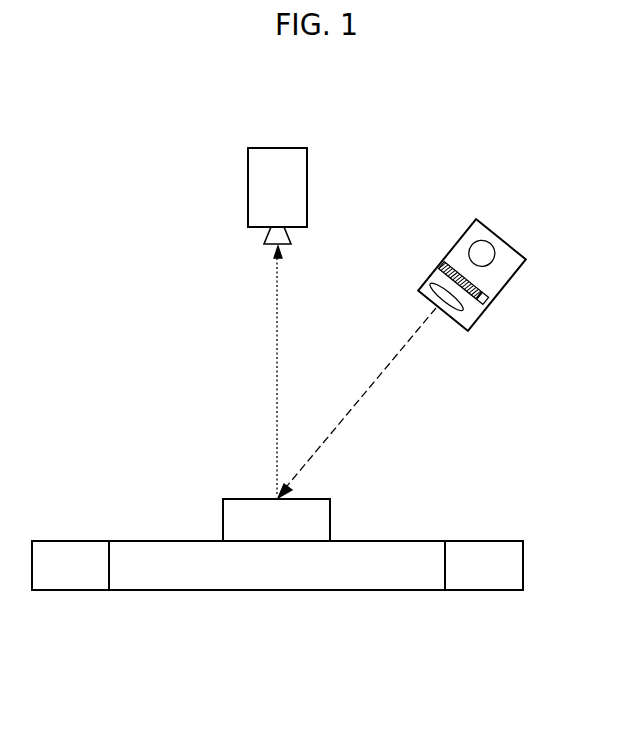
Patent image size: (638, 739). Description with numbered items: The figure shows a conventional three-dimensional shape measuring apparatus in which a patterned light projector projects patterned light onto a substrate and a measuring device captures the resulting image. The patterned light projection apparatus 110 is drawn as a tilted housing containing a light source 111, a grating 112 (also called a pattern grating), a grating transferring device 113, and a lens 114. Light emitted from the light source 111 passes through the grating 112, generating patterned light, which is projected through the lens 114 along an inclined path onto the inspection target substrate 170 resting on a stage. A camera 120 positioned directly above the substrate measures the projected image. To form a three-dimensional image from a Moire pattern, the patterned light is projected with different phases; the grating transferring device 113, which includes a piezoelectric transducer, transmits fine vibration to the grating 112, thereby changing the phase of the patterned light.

The patterned light projection apparatus 110 is at (503, 236).
The light source 111 is at (476, 246).
The grating 112 is at (442, 263).
The grating transferring device 113 is at (497, 293).
The lens 114 is at (480, 332).
The camera 120 is at (276, 148).
The inspection target substrate 170 is at (278, 529).